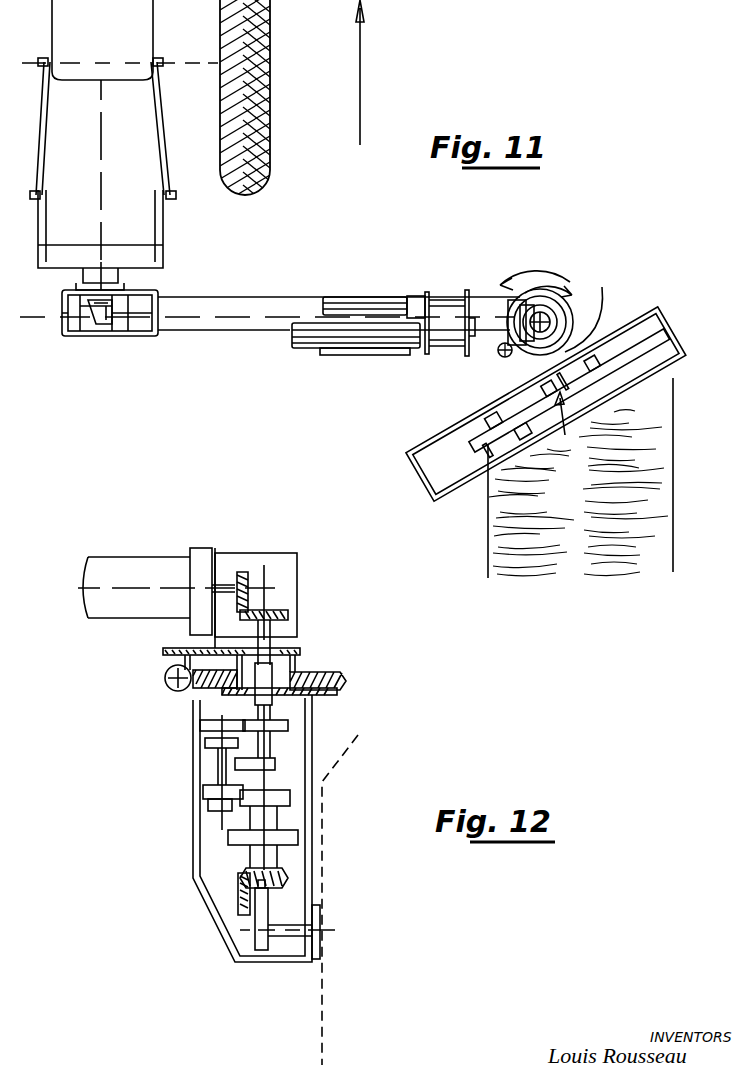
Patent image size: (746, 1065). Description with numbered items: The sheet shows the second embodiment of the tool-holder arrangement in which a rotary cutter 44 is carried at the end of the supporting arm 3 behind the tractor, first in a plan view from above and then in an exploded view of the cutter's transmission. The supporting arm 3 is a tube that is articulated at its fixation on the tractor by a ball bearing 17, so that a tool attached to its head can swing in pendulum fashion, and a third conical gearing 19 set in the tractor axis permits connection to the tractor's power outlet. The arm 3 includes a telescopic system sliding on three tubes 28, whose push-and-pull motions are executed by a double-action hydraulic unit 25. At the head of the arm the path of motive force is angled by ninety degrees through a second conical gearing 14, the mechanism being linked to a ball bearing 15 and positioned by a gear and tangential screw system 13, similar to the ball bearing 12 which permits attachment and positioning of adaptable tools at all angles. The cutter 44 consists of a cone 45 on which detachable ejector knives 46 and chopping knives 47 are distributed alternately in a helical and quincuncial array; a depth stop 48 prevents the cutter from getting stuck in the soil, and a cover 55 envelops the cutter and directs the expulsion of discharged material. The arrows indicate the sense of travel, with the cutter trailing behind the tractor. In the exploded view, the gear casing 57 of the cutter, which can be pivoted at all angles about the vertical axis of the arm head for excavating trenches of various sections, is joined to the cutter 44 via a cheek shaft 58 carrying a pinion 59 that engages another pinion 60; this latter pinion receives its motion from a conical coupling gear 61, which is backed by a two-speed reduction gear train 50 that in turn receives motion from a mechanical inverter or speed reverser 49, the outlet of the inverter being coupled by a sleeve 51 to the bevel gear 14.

In FIG. 11, the supporting arm 3 is at (250, 328).
In FIG. 12, the supporting arm 3 is at (108, 606).
In FIG. 12, the ball bearing 12 is at (300, 692).
In FIG. 11, the gear and tangential screw system 13 is at (498, 352).
In FIG. 12, the gear and tangential screw system 13 is at (190, 688).
In FIG. 11, the second conical gearing 14 is at (556, 312).
In FIG. 12, the second conical gearing 14 is at (282, 615).
In FIG. 12, the ball bearing 15 is at (205, 552).
In FIG. 11, the ball bearing 17 is at (82, 286).
In FIG. 11, the third conical gearing 19 is at (108, 324).
In FIG. 11, the double-action hydraulic unit 25 is at (312, 338).
In FIG. 11, the tubes 28 is at (362, 303).
In FIG. 11, the rotary cutter 44 is at (566, 424).
In FIG. 12, the rotary cutter 44 is at (328, 1022).
In FIG. 11, the cone 45 is at (622, 350).
In FIG. 11, the ejector knife 46 is at (492, 412).
In FIG. 11, the chopping knife 47 is at (528, 350).
In FIG. 11, the depth stop 48 is at (655, 368).
In FIG. 12, the mechanical inverter 49 is at (270, 746).
In FIG. 12, the two-speed reduction gear train 50 is at (268, 808).
In FIG. 12, the sleeve 51 is at (274, 674).
In FIG. 11, the cover 55 is at (415, 468).
In FIG. 12, the gear casing 57 is at (205, 845).
In FIG. 11, the cheek shaft 58 is at (593, 307).
In FIG. 12, the cheek shaft 58 is at (318, 930).
In FIG. 12, the pinion 59 is at (260, 950).
In FIG. 12, the pinion 60 is at (272, 888).
In FIG. 12, the conical coupling gear 61 is at (245, 882).